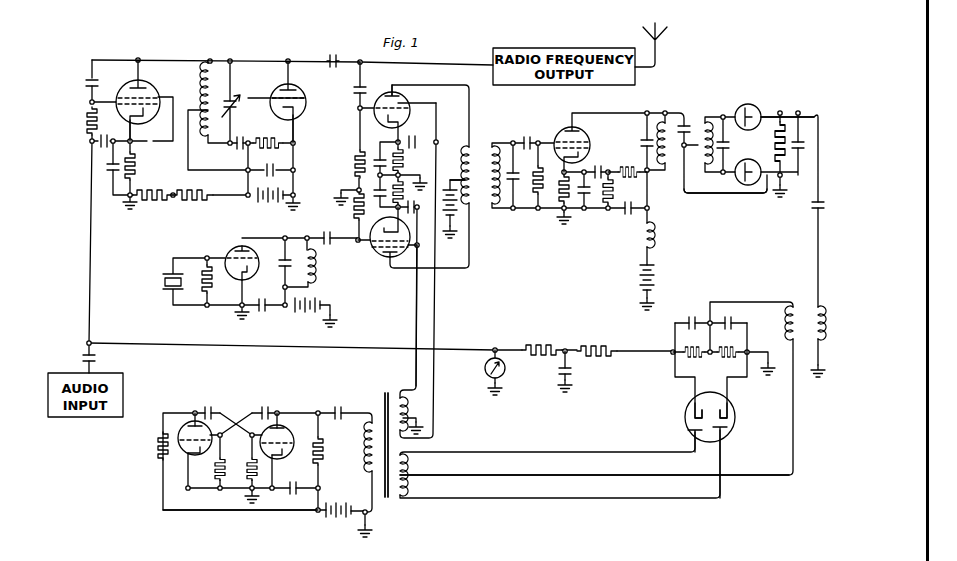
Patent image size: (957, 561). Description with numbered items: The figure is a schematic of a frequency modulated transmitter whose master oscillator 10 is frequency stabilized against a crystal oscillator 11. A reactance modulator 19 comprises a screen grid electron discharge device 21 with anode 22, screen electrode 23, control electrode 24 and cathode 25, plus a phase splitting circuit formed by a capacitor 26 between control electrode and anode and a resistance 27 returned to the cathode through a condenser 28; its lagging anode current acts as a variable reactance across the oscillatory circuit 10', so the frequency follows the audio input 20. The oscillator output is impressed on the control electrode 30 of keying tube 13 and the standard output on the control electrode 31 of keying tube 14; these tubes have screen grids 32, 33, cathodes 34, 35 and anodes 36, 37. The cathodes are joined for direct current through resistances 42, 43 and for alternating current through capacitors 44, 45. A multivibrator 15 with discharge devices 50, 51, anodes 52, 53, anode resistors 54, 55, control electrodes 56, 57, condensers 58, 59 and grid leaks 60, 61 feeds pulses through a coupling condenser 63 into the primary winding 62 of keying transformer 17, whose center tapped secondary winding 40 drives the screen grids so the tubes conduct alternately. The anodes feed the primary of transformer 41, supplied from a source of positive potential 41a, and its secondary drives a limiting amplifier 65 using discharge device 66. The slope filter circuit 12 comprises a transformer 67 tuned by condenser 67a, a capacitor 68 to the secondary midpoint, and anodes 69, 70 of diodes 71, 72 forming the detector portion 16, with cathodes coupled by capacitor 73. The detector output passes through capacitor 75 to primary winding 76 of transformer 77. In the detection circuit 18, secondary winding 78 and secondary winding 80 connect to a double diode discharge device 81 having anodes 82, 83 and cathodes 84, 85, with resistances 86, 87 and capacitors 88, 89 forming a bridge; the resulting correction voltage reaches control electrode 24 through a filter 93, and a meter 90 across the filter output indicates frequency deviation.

The master oscillator 10 is at (285, 91).
The oscillatory circuit 10' is at (196, 98).
The crystal oscillator 11 is at (222, 288).
The slope filter circuit 12 is at (685, 131).
The keying tube 13 is at (401, 107).
The keying tube 14 is at (384, 250).
The multivibrator 15 is at (240, 500).
The detector portion 16 is at (787, 105).
The keying transformer 17 is at (389, 437).
The detection circuit 18 is at (711, 346).
The reactance modulator 19 is at (226, 50).
The audio input source 20 is at (57, 373).
The electron discharge device 21 is at (145, 101).
The anode 22 is at (142, 87).
The screen electrode 23 is at (135, 97).
The control electrode 24 is at (124, 103).
The cathode 25 is at (147, 113).
The capacitor 26 is at (86, 82).
The resistance 27 is at (88, 120).
The condenser 28 is at (108, 138).
The control electrode 30 is at (407, 107).
The control electrode 31 is at (372, 243).
The screen grid 32 is at (363, 89).
The screen grid 33 is at (410, 246).
The cathode 34 is at (386, 118).
The cathode 35 is at (398, 230).
The anode 36 is at (395, 92).
The anode 37 is at (390, 262).
The center tapped secondary winding 40 is at (414, 382).
The transformer 41 is at (480, 162).
The source of positive potential 41a is at (452, 180).
The resistance 42 is at (401, 158).
The resistance 43 is at (405, 204).
The capacitor 44 is at (379, 158).
The capacitor 45 is at (362, 206).
The electron discharge device 50 is at (191, 447).
The electron discharge device 51 is at (282, 449).
The anode 52 is at (192, 412).
The anode 53 is at (279, 424).
The anode resistor 54 is at (158, 450).
The anode resistor 55 is at (323, 452).
The control electrode 56 is at (190, 431).
The control electrode 57 is at (288, 432).
The condenser 58 is at (209, 407).
The condenser 59 is at (265, 407).
The grid leak 60 is at (224, 463).
The grid leak 61 is at (252, 463).
The primary winding 62 is at (370, 429).
The coupling condenser 63 is at (338, 408).
The limiting amplifier 65 is at (563, 142).
The electron discharge device 66 is at (622, 150).
The transformer 67 is at (659, 165).
The condenser 67a is at (729, 146).
The capacitor 68 is at (689, 125).
The anode 69 is at (741, 108).
The anode 70 is at (748, 186).
The diode 71 is at (771, 141).
The diode 72 is at (725, 185).
The capacitor 73 is at (800, 148).
The capacitor 75 is at (814, 205).
The primary winding 76 is at (819, 340).
The transformer 77 is at (809, 310).
The secondary winding 78 is at (787, 313).
The secondary winding 80 is at (590, 498).
The double diode discharge device 81 is at (697, 417).
The anode 82 is at (692, 436).
The anode 83 is at (728, 434).
The cathode 84 is at (693, 410).
The cathode 85 is at (728, 410).
The resistance 86 is at (673, 352).
The resistance 87 is at (745, 352).
The capacitor 88 is at (692, 315).
The capacitor 89 is at (729, 320).
The meter 90 is at (483, 368).
The filter 93 is at (569, 363).